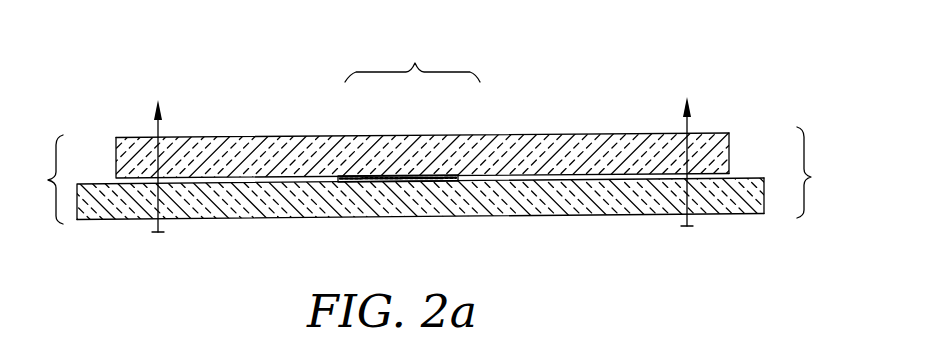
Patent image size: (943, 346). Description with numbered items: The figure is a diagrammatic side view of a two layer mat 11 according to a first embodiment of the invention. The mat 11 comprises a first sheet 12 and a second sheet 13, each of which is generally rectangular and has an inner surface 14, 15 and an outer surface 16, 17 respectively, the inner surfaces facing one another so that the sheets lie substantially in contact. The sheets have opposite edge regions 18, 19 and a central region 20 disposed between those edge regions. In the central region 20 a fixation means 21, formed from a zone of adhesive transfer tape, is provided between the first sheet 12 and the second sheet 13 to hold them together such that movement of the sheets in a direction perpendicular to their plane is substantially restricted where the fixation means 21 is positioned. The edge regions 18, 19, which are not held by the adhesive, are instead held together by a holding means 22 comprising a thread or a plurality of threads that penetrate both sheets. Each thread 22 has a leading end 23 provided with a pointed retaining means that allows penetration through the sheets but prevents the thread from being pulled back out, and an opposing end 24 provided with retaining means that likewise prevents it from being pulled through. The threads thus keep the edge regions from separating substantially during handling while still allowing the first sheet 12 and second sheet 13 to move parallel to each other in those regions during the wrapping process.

The mat 11 is at (600, 38).
The first sheet 12 is at (313, 150).
The second sheet 13 is at (313, 207).
The inner surface 14 is at (714, 168).
The inner surface 15 is at (752, 178).
The outer surface 16 is at (575, 133).
The outer surface 17 is at (523, 216).
The edge region 18 is at (41, 179).
The edge region 19 is at (818, 172).
The central region 20 is at (412, 59).
The fixation means 21 is at (443, 176).
The holding means 22 is at (172, 106).
The leading end 23 is at (690, 104).
The opposing end 24 is at (691, 229).